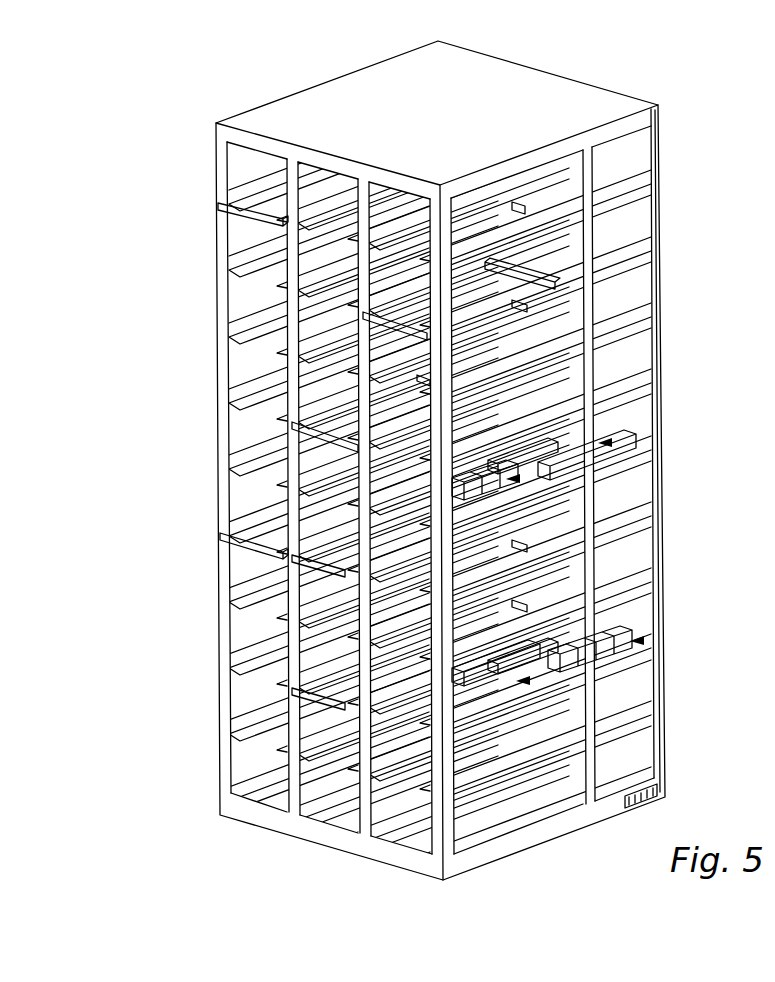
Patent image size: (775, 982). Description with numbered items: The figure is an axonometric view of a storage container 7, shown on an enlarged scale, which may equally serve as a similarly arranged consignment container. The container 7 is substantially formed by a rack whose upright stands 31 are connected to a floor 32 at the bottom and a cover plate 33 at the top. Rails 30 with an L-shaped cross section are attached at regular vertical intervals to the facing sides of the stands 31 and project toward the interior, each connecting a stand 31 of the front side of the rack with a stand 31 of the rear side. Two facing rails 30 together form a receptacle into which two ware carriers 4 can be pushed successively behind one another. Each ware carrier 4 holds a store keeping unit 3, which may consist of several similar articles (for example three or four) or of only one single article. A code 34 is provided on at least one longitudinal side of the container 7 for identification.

The storage and consignment container 7 is at (204, 182).
The store keeping unit 3 is at (555, 478).
The ware carrier 4 is at (470, 300).
The rail 30 is at (287, 617).
The stand 31 is at (660, 412).
The floor 32 is at (325, 845).
The cover plate 33 is at (598, 100).
The code 34 is at (646, 812).